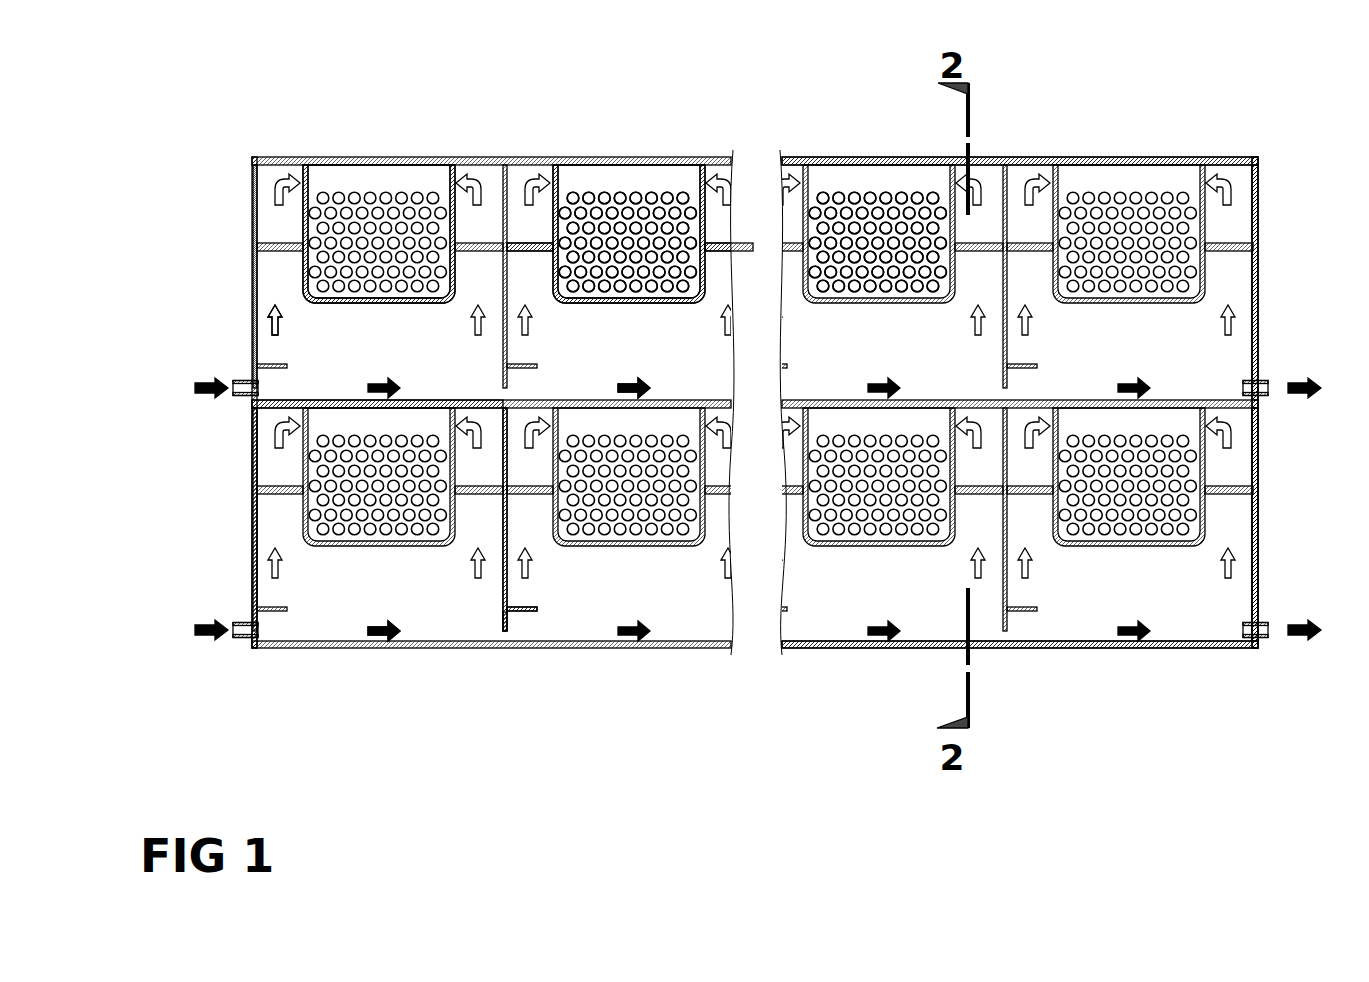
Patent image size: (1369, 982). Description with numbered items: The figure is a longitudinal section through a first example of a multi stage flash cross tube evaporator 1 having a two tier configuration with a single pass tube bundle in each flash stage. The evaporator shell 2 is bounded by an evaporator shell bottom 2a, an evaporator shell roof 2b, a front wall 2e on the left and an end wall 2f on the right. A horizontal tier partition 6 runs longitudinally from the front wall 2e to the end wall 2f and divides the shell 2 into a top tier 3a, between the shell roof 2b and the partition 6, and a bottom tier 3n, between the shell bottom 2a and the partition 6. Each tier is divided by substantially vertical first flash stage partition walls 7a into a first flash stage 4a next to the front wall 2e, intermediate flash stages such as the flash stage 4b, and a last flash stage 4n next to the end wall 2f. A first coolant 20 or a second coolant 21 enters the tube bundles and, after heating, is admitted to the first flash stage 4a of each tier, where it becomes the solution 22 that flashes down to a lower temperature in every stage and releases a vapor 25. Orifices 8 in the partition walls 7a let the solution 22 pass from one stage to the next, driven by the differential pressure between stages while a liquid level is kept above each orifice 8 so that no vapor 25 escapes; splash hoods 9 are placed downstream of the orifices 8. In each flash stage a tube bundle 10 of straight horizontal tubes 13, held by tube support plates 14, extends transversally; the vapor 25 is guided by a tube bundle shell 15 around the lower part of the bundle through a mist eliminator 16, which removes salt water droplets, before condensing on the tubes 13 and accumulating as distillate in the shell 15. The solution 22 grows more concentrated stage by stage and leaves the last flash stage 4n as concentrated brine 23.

The evaporator 1 is at (252, 205).
The evaporator shell 2 is at (1227, 157).
The evaporator shell bottom 2a is at (1170, 648).
The evaporator shell roof 2b is at (1017, 157).
The front wall 2e is at (252, 520).
The end wall 2f is at (1257, 462).
The top tier 3a is at (1258, 215).
The bottom tier 3n is at (1258, 528).
The first flash stage 4a is at (357, 359).
The intermediate flash stage 4b is at (607, 359).
The last flash stage 4n is at (1107, 359).
The horizontal tier partition 6 is at (283, 405).
The first flash stage partition wall 7a is at (503, 590).
The orifice 8 is at (505, 630).
The splash hood 9 is at (540, 608).
The tube bundle 10 is at (603, 200).
The straight tube 13 is at (650, 198).
The tube support plate 14 is at (902, 180).
The tube bundle shell 15 is at (300, 280).
The mist eliminator 16 is at (519, 243).
The first coolant 20 is at (216, 380).
The second coolant 21 is at (220, 483).
The solution 22 is at (653, 383).
The concentrated brine 23 is at (1308, 382).
The vapor 25 is at (275, 322).